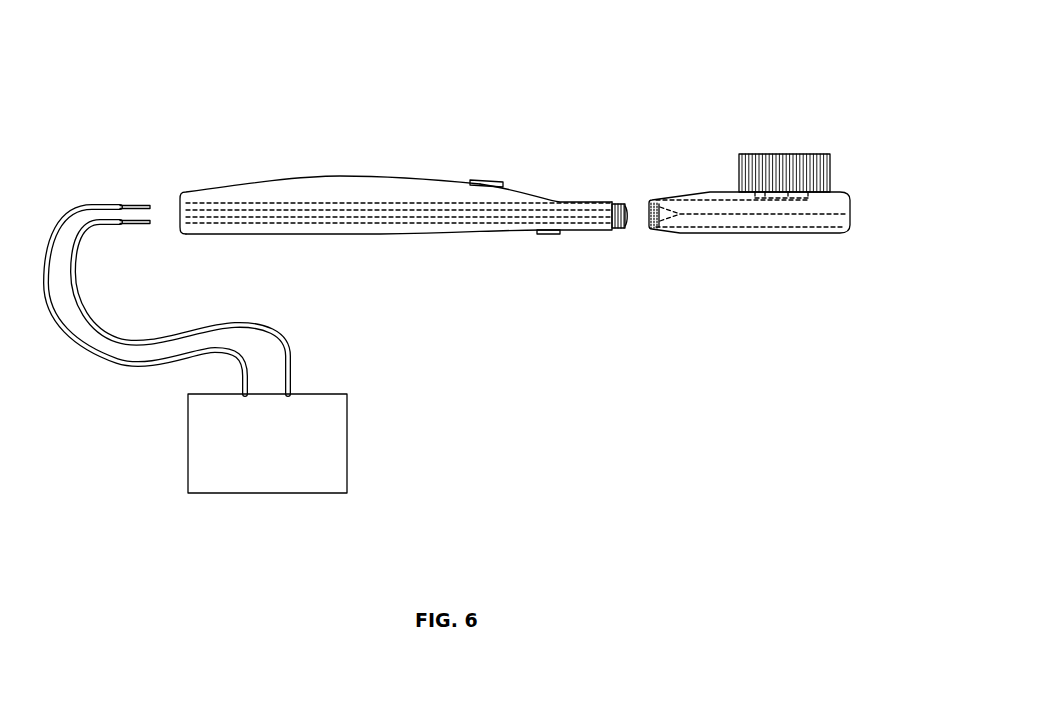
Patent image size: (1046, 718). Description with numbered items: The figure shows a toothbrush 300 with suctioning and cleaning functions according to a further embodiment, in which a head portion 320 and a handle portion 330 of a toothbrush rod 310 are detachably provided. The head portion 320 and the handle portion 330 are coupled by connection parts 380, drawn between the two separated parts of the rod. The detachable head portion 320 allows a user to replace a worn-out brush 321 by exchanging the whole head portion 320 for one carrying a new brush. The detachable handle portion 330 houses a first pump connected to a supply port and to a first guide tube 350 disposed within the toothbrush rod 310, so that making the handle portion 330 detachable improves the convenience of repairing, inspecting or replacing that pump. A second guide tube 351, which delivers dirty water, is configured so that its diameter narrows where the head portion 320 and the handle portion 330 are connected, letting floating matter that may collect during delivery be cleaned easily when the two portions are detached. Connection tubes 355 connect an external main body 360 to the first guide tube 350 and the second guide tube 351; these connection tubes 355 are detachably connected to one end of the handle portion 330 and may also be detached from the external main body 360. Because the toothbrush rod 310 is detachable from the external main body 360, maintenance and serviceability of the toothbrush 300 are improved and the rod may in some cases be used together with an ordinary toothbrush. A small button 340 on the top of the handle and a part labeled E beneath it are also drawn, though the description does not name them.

The toothbrush with suctioning and cleaning functions 300 is at (877, 21).
The toothbrush rod 310 is at (281, 162).
The head portion 320 is at (772, 253).
The brush 321 is at (787, 154).
The handle portion 330 is at (457, 248).
The power button 340 is at (484, 180).
The first guide tube 350 is at (557, 202).
The second guide tube 351 is at (780, 229).
The connection tubes 355 is at (60, 318).
The external main body 360 is at (347, 444).
The connection parts 380 is at (622, 224).
The electrode terminal E is at (552, 234).